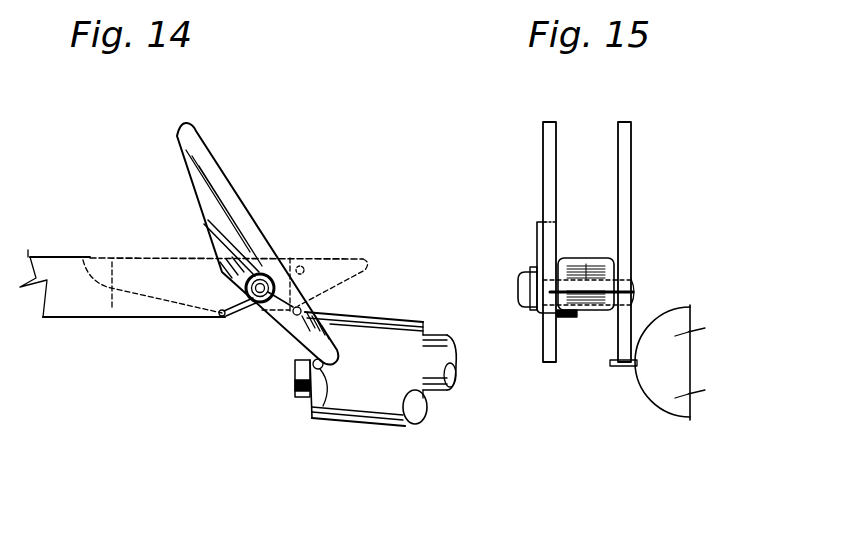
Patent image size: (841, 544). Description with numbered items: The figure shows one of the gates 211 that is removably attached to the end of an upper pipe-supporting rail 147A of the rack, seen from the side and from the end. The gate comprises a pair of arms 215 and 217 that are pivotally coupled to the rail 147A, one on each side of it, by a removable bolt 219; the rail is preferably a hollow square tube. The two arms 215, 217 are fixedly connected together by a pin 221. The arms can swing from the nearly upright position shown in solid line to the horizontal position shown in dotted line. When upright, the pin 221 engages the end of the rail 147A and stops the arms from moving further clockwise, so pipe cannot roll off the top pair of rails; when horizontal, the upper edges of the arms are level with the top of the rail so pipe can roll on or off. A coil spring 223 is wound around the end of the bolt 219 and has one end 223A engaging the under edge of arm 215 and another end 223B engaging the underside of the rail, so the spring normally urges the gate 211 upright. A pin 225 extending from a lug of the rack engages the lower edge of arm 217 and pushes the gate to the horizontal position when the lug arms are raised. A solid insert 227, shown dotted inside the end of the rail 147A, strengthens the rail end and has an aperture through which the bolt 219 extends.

In FIG. 14, the rail 147A is at (62, 318).
In FIG. 14, the gate 211 is at (315, 190).
In FIG. 14, the arm 215 is at (215, 166).
In FIG. 15, the arm 215 is at (543, 195).
In FIG. 15, the arm 217 is at (632, 200).
In FIG. 15, the bolt 219 is at (586, 278).
In FIG. 14, the pin 221 is at (294, 316).
In FIG. 15, the pin 221 is at (575, 318).
In FIG. 15, the coil spring 223 is at (537, 247).
In FIG. 14, the spring end 223A is at (204, 224).
In FIG. 14, the spring end 223B is at (227, 320).
In FIG. 14, the pin 225 is at (317, 420).
In FIG. 15, the pin 225 is at (632, 366).
In FIG. 14, the solid insert 227 is at (113, 300).